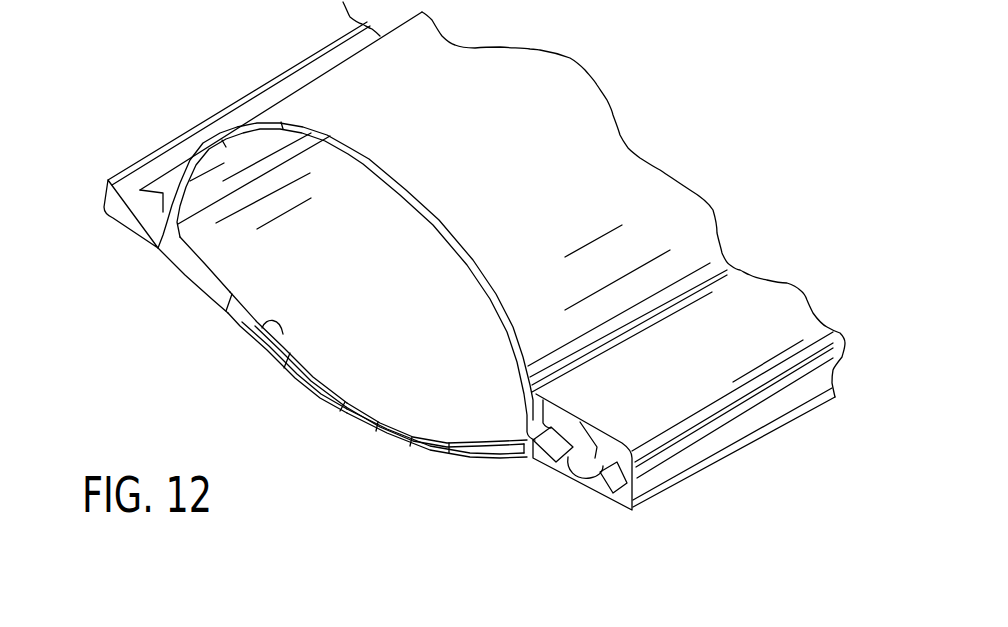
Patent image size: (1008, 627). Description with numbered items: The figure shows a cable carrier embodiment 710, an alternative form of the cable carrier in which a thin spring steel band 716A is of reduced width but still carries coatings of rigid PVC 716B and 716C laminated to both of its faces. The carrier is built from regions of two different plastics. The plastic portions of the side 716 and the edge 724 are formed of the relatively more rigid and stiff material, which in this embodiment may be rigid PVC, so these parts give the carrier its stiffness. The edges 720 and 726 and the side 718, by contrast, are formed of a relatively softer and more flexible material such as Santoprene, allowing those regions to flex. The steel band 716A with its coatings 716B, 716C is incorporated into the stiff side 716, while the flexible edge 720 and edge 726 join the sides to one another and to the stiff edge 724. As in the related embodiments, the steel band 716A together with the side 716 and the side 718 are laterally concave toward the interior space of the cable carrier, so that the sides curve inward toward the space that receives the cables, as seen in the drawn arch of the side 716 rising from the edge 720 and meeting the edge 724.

The cable carrier embodiment 710 is at (189, 105).
The side 716 is at (189, 300).
The spring steel band 716A is at (308, 387).
The rigid PVC coating 716B is at (237, 319).
The rigid PVC coating 716C is at (407, 442).
The side 718 is at (342, 84).
The edge 720 is at (147, 148).
The edge 724 is at (733, 450).
The edge 726 is at (770, 318).